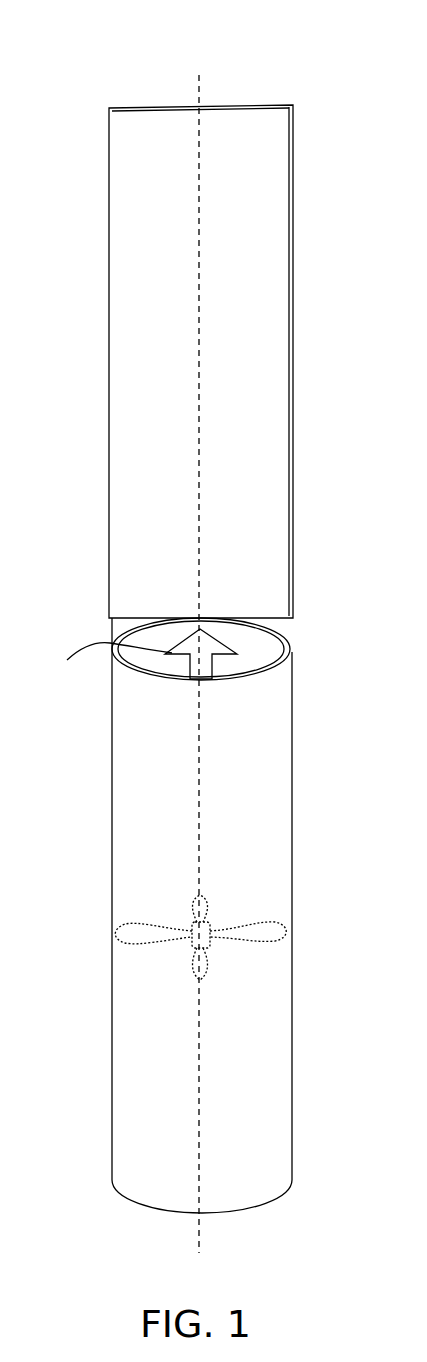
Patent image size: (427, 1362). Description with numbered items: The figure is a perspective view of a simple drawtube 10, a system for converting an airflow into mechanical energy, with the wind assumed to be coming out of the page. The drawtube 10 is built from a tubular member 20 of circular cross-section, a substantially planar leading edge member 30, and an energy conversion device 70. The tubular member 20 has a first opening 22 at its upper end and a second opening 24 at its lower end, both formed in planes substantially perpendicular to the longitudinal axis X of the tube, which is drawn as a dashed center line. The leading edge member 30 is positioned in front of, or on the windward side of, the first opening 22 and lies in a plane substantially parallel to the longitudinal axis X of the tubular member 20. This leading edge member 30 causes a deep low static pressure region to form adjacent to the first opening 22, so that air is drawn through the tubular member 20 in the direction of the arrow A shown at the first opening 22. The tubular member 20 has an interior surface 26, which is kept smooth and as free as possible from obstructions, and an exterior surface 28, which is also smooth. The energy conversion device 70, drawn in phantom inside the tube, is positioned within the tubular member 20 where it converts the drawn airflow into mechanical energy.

The drawtube 10 is at (126, 54).
The substantially planar leading edge member 30 is at (303, 372).
The tubular member 20 is at (295, 796).
The first opening 22 is at (289, 639).
The interior surface 26 is at (249, 647).
The exterior surface 28 is at (293, 874).
The second opening 24 is at (265, 1205).
The energy conversion device 70 is at (265, 933).
The arrow A is at (109, 660).
The longitudinal axis X is at (200, 1227).